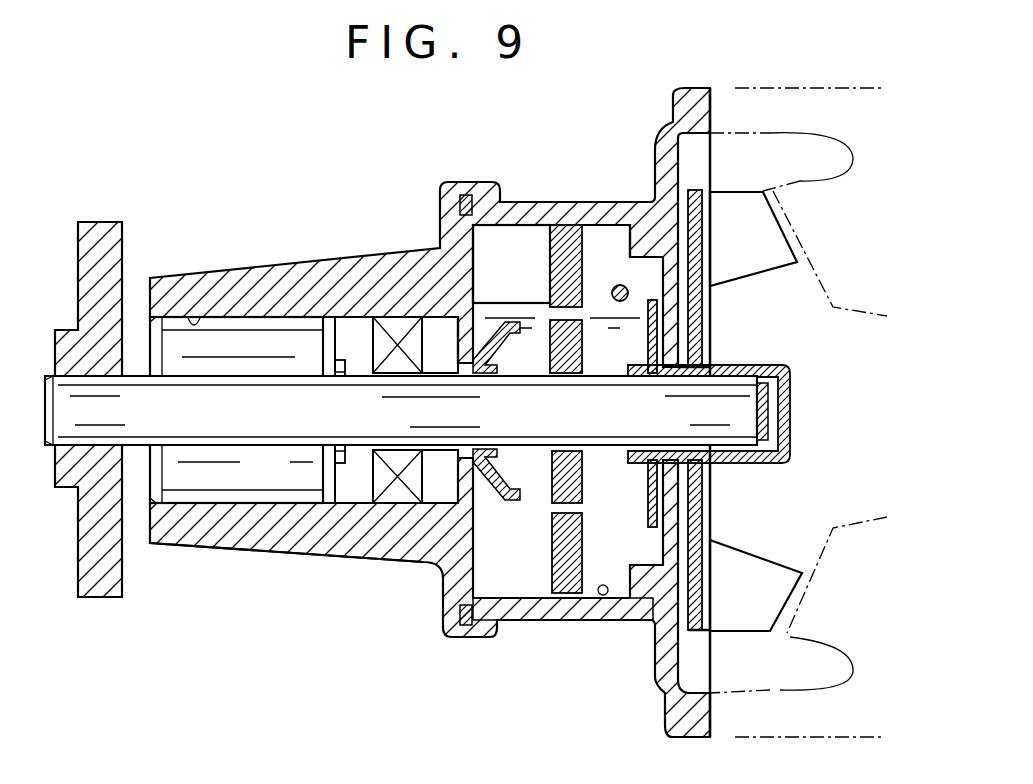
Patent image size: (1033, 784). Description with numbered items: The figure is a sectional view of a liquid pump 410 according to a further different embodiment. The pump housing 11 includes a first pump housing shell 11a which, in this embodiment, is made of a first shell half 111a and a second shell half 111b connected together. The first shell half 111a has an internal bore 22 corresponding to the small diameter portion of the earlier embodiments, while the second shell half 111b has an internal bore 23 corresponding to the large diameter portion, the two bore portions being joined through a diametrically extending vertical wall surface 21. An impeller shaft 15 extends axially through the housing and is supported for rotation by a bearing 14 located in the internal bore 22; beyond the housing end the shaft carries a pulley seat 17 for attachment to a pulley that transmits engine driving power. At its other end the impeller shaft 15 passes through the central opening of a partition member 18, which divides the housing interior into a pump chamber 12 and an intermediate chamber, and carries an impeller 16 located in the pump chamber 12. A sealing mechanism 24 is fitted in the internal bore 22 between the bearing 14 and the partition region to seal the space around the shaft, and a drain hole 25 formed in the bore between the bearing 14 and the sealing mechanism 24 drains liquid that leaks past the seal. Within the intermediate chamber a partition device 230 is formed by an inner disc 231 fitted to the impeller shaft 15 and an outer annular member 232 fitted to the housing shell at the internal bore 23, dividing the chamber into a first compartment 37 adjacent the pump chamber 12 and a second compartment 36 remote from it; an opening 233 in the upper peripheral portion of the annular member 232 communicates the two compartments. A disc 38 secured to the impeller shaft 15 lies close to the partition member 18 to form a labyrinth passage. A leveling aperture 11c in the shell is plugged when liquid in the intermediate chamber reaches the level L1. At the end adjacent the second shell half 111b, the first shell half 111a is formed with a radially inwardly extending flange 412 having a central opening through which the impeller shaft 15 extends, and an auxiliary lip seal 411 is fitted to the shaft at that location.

The pulley seat 17 is at (95, 245).
The liquid pump 410 is at (252, 255).
The pump housing 11 is at (427, 412).
The internal bore 22 is at (194, 318).
The radially inwardly extending flange 412 is at (456, 350).
The leveling aperture 11c is at (612, 293).
The outer annular member 232 is at (541, 258).
The opening 233 is at (582, 232).
The liquid level L1 is at (633, 297).
The pump chamber 12 is at (687, 135).
The inner disc 231 is at (578, 352).
The second compartment 36 is at (495, 272).
The first compartment 37 is at (592, 272).
The bearing 14 is at (242, 357).
The impeller shaft 15 is at (636, 423).
The disc 38 is at (652, 478).
The partition member 18 is at (672, 518).
The impeller 16 is at (763, 610).
The partition device 230 is at (615, 508).
The internal bore 23 is at (603, 596).
The second shell half 111b is at (573, 610).
The auxiliary lip seal 411 is at (509, 510).
The vertical wall surface 21 is at (494, 628).
The drain hole 25 is at (340, 543).
The sealing mechanism 24 is at (318, 532).
The first pump housing shell 11a is at (203, 530).
The first shell half 111a is at (247, 530).